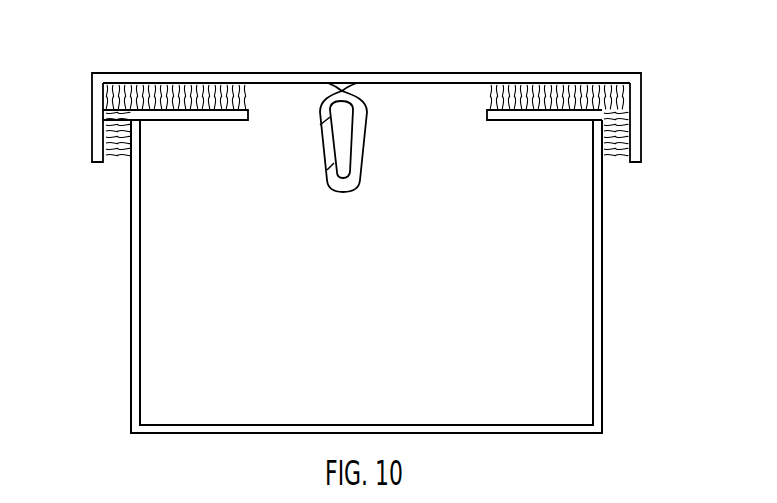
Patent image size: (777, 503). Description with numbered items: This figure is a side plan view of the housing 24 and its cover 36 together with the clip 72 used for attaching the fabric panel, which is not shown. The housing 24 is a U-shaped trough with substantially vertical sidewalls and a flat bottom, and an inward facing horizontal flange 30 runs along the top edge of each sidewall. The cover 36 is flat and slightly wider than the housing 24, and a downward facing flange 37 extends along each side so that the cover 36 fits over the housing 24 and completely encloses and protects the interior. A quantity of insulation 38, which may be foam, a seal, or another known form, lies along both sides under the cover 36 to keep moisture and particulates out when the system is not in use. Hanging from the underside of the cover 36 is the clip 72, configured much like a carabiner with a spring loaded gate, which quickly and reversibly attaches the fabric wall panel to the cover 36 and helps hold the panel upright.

The housing 24 is at (620, 291).
The horizontal flange 30 is at (195, 121).
The cover 36 is at (340, 73).
The downward facing flange 37 is at (91, 125).
The insulation 38 is at (197, 90).
The clip 72 is at (367, 155).